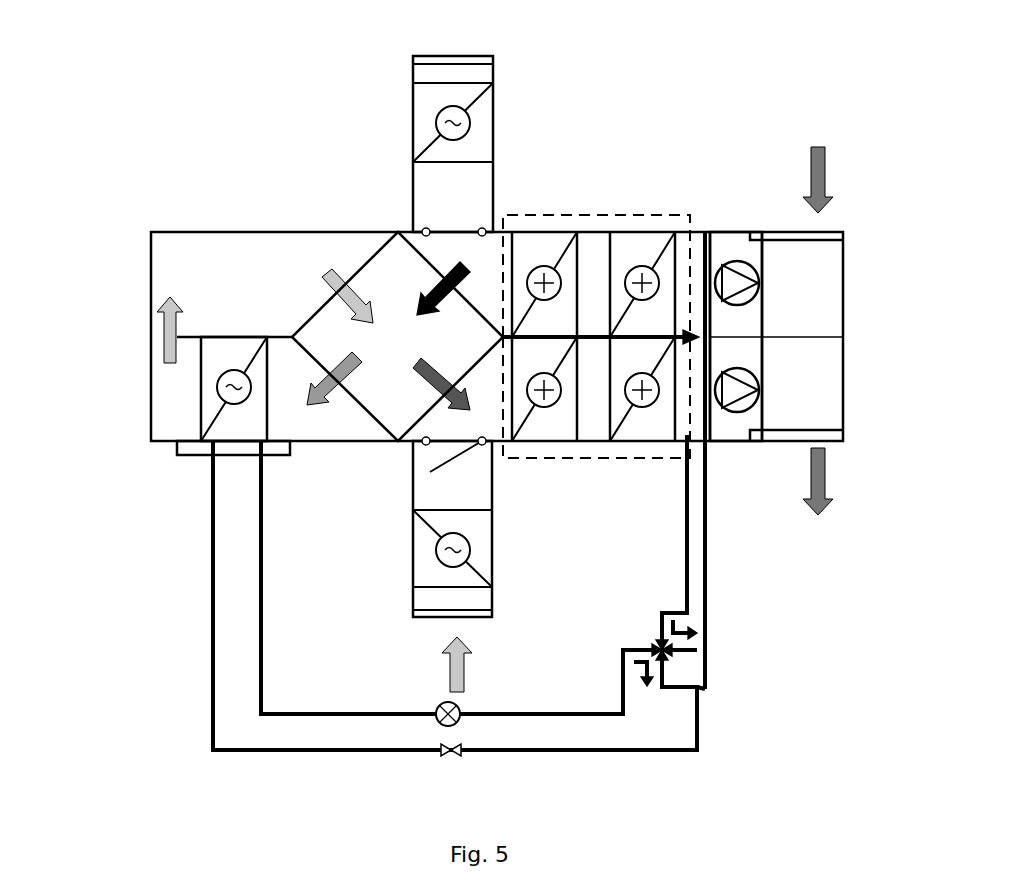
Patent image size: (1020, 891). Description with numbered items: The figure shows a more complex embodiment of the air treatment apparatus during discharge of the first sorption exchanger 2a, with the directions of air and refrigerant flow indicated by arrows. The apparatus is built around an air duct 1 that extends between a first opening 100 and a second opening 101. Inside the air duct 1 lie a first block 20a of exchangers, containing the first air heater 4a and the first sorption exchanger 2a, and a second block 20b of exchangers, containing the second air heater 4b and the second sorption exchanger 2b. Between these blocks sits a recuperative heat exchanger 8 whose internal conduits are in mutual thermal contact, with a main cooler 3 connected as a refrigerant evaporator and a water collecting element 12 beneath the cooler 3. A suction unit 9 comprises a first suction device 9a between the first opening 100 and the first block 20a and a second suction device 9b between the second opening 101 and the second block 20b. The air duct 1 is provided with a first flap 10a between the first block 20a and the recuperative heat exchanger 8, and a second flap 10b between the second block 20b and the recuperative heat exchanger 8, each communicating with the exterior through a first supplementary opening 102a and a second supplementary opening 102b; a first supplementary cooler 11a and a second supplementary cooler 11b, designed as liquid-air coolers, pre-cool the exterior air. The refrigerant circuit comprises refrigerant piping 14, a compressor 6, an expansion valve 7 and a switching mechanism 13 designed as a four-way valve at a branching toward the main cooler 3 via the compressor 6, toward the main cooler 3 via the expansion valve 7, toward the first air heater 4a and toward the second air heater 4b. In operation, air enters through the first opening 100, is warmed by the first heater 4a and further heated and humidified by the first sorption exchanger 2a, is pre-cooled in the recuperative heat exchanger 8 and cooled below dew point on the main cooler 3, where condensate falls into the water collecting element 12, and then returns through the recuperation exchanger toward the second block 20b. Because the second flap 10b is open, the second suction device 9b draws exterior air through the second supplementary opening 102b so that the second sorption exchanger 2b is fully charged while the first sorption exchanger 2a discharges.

The air duct 1 is at (185, 230).
The main cooler 3 is at (240, 330).
The recuperative heat exchanger 8 is at (340, 333).
The first flap 10a is at (452, 226).
The second flap 10b is at (450, 462).
The first supplementary cooler 11a is at (410, 128).
The second supplementary cooler 11b is at (410, 548).
The first supplementary opening 102a is at (455, 56).
The second supplementary opening 102b is at (455, 619).
The first sorption exchanger 2a is at (548, 231).
The second sorption exchanger 2b is at (545, 443).
The first block of exchangers 20a is at (603, 216).
The second block of exchangers 20b is at (597, 461).
The first air heater 4a is at (650, 231).
The second air heater 4b is at (655, 443).
The suction unit 9 is at (768, 352).
The first suction device 9a is at (728, 242).
The second suction device 9b is at (735, 443).
The first opening 100 is at (793, 230).
The second opening 101 is at (795, 448).
The water collecting element 12 is at (183, 456).
The refrigerant piping 14 is at (700, 337).
The switching mechanism 13 is at (675, 656).
The compressor 6 is at (440, 723).
The expansion valve 7 is at (451, 760).